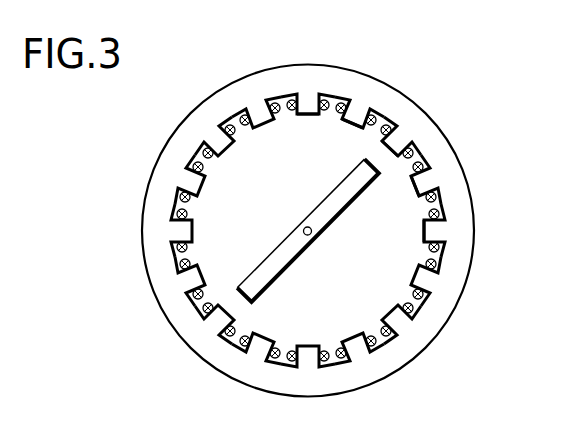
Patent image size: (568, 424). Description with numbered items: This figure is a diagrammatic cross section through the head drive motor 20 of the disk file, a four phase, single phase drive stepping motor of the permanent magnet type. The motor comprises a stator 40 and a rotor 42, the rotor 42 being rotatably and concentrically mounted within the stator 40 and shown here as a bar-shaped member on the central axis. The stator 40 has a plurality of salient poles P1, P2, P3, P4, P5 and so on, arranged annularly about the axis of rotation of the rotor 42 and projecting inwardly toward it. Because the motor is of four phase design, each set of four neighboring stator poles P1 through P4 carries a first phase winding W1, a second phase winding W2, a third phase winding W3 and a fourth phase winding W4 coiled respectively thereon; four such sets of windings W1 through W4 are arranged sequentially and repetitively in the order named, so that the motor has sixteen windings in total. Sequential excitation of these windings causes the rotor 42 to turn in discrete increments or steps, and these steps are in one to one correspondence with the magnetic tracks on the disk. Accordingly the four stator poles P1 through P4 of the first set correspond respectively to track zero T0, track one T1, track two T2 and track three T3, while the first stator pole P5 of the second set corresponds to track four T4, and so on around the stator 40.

The head drive motor 20 is at (201, 68).
The stator 40 is at (148, 188).
The rotor 42 is at (298, 232).
The track zero T0 is at (321, 93).
The track one T1 is at (373, 103).
The track two T2 is at (419, 128).
The track three T3 is at (454, 160).
The track four T4 is at (484, 230).
The salient pole P1 is at (306, 117).
The salient pole P2 is at (352, 125).
The salient pole P3 is at (391, 151).
The salient pole P4 is at (414, 191).
The salient pole P5 is at (421, 235).
The first phase winding W1 is at (297, 100).
The second phase winding W2 is at (346, 103).
The third phase winding W3 is at (412, 152).
The third phase winding W4 is at (424, 167).